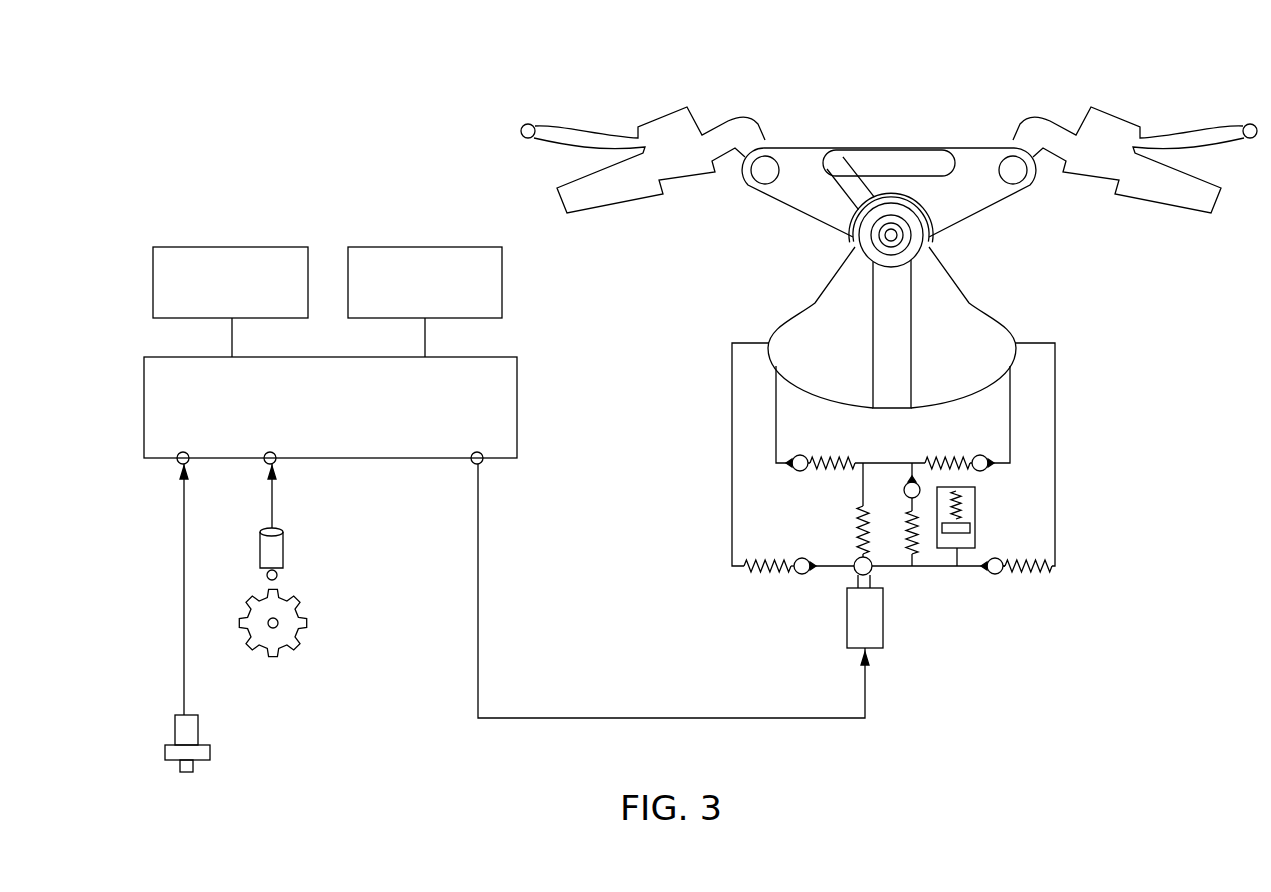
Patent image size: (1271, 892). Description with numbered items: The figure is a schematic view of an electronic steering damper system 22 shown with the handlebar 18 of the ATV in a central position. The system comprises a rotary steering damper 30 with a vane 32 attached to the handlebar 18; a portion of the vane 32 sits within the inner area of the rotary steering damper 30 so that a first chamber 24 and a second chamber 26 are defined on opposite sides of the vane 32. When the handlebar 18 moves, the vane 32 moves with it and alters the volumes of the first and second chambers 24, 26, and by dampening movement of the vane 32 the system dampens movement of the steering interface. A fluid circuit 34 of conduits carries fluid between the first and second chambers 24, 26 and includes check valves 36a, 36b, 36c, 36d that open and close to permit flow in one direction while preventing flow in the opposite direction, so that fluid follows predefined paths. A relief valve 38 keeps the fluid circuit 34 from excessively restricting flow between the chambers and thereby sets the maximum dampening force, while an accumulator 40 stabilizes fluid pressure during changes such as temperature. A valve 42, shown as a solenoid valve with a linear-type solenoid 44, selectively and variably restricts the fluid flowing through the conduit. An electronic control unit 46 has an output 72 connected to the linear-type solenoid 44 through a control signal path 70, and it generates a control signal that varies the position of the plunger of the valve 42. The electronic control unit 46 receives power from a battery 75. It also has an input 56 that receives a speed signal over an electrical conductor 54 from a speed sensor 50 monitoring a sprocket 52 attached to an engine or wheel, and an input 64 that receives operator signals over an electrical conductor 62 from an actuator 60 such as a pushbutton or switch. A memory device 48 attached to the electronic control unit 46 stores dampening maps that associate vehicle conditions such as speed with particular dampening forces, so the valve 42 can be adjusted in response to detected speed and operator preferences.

The handlebar 18 is at (1030, 120).
The electronic steering damper system 22 is at (264, 147).
The first chamber 24 is at (848, 365).
The second chamber 26 is at (961, 365).
The rotary steering damper 30 is at (1012, 287).
The vane 32 is at (905, 323).
The fluid circuit 34 is at (1068, 439).
The check valve 36a is at (800, 455).
The check valve 36b is at (980, 455).
The check valve 36c is at (995, 576).
The check valve 36d is at (802, 576).
The relief valve 38 is at (915, 556).
The accumulator 40 is at (975, 500).
The valve 42 is at (857, 520).
The linear-type solenoid 44 is at (883, 638).
The electronic control unit 46 is at (144, 416).
The memory device 48 is at (418, 247).
The speed sensor 50 is at (283, 550).
The sprocket 52 is at (302, 636).
The electrical conductor 54 is at (272, 500).
The input 56 is at (271, 452).
The actuator 60 is at (175, 730).
The electrical conductor 62 is at (184, 560).
The input 64 is at (184, 452).
The control signal path 70 is at (478, 560).
The output 72 is at (478, 452).
The battery 75 is at (200, 247).